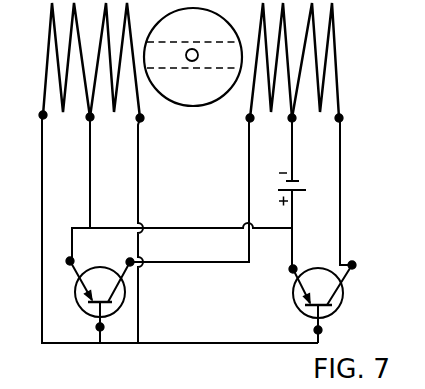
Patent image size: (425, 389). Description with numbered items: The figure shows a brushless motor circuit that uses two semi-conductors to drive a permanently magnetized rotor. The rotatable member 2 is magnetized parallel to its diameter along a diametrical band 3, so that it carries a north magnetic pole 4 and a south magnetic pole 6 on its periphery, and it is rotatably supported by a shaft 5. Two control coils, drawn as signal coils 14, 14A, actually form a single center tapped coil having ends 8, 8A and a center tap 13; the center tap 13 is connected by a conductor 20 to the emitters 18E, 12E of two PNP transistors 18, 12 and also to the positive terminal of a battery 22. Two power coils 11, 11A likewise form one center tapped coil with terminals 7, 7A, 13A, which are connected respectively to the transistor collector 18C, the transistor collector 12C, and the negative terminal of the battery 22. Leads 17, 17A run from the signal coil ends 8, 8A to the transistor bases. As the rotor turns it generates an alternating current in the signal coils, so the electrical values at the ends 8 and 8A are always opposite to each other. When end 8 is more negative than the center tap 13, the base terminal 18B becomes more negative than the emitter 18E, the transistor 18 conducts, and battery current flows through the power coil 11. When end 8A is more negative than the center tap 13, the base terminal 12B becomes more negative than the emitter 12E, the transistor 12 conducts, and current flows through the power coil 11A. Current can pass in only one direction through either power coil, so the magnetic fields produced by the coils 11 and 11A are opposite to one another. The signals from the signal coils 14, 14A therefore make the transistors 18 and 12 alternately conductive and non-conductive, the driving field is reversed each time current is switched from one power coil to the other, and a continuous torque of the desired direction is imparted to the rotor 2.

The rotatable member 2 is at (197, 93).
The diametrical band 3 is at (160, 45).
The north magnetic pole 4 is at (158, 56).
The shaft 5 is at (196, 50).
The south magnetic pole 6 is at (232, 67).
The terminal 7 is at (250, 120).
The terminal 7A is at (339, 120).
The end 8 is at (42, 118).
The end 8A is at (140, 120).
The power coil 11 is at (263, 4).
The power coil 11A is at (332, 4).
The PNP transistor 12 is at (346, 297).
The terminal 12B is at (320, 330).
The transistor collector 12C is at (354, 265).
The emitter 12E is at (296, 267).
The center tap 13 is at (90, 119).
The terminal 13A is at (292, 120).
The signal coil 14 is at (52, 4).
The signal coil 14A is at (127, 4).
The lead wire 17 is at (43, 207).
The lead wire 17A is at (138, 195).
The PNP transistor 18 is at (75, 294).
The terminal 18B is at (102, 327).
The transistor collector 18C is at (130, 261).
The emitter 18E is at (72, 260).
The conductor 20 is at (90, 195).
The battery 22 is at (306, 191).